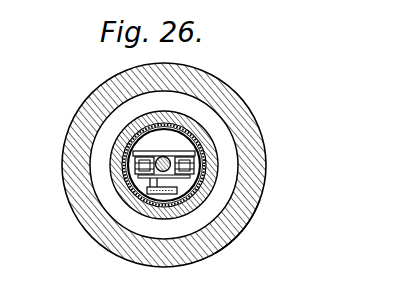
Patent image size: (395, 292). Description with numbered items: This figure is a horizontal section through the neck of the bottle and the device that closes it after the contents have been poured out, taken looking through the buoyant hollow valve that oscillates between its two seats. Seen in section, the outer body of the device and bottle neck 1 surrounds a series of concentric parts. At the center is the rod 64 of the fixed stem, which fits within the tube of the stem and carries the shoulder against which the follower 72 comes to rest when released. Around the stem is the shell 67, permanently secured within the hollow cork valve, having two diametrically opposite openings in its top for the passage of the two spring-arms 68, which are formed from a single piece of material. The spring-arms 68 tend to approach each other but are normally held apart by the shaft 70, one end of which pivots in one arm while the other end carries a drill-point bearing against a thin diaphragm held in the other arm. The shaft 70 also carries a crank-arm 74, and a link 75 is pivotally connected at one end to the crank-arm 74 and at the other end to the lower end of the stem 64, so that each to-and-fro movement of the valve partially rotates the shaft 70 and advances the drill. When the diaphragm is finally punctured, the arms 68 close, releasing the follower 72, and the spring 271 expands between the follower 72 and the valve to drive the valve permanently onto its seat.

The transport body 1 is at (64, 152).
The rod 64 is at (93, 206).
The crank-arm 74 is at (117, 236).
The link 75 is at (238, 218).
The spring-arms 68 is at (104, 180).
The spring 271 is at (199, 133).
The shell 67 is at (208, 177).
The shaft 70 is at (230, 182).
The follower 72 is at (170, 157).